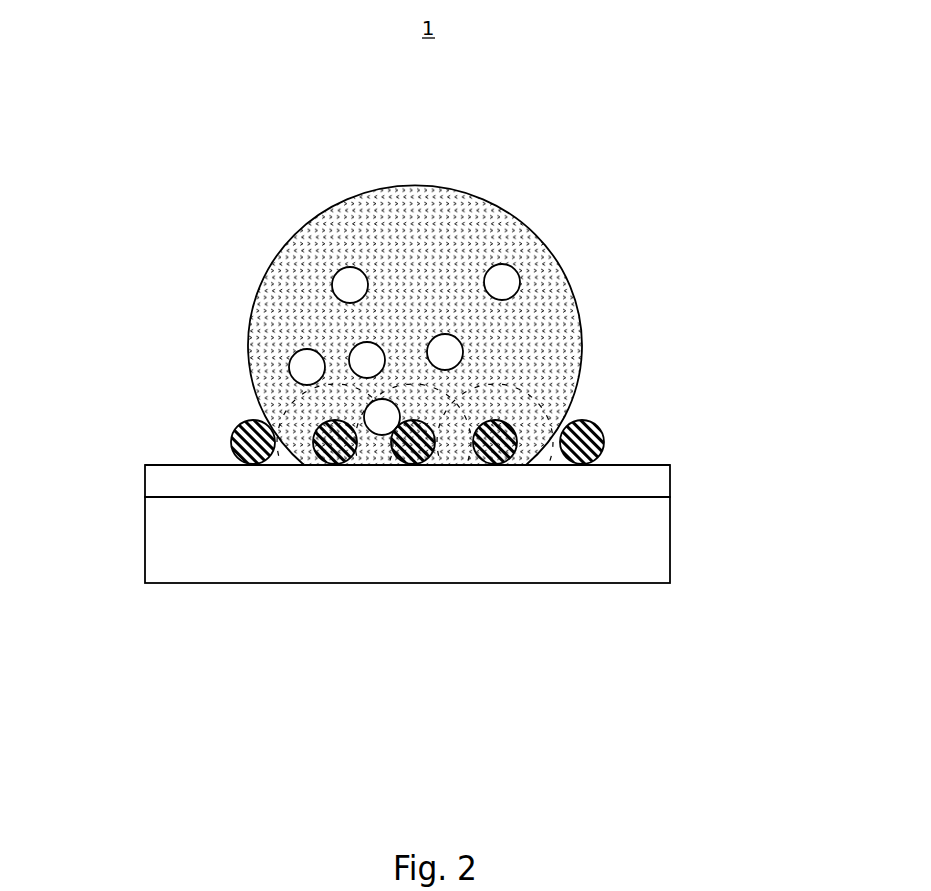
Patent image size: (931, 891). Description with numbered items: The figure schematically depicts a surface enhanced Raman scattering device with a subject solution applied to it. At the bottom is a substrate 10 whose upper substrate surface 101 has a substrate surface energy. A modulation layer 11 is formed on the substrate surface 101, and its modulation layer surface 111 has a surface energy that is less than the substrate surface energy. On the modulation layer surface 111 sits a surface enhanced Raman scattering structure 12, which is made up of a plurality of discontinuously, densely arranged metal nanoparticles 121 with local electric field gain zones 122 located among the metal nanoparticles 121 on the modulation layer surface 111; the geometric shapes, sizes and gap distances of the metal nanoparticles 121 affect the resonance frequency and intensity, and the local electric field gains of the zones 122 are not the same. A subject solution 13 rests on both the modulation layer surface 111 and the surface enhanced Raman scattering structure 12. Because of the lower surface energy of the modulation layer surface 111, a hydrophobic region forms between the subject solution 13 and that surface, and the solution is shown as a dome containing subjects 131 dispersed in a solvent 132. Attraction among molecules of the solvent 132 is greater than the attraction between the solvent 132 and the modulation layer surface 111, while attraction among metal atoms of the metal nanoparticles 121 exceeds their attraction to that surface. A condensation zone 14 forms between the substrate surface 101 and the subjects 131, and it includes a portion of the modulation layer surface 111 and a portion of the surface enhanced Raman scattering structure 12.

The substrate 10 is at (662, 560).
The substrate surface 101 is at (165, 498).
The modulation layer 11 is at (663, 485).
The modulation layer surface 111 is at (155, 465).
The surface enhanced Raman scattering structure 12 is at (605, 438).
The metal nanoparticles 121 is at (237, 423).
The local electric field gain zones 122 is at (460, 388).
The subject solution 13 is at (535, 233).
The subjects 131 is at (343, 283).
The solvent 132 is at (347, 220).
The condensation zone 14 is at (525, 468).